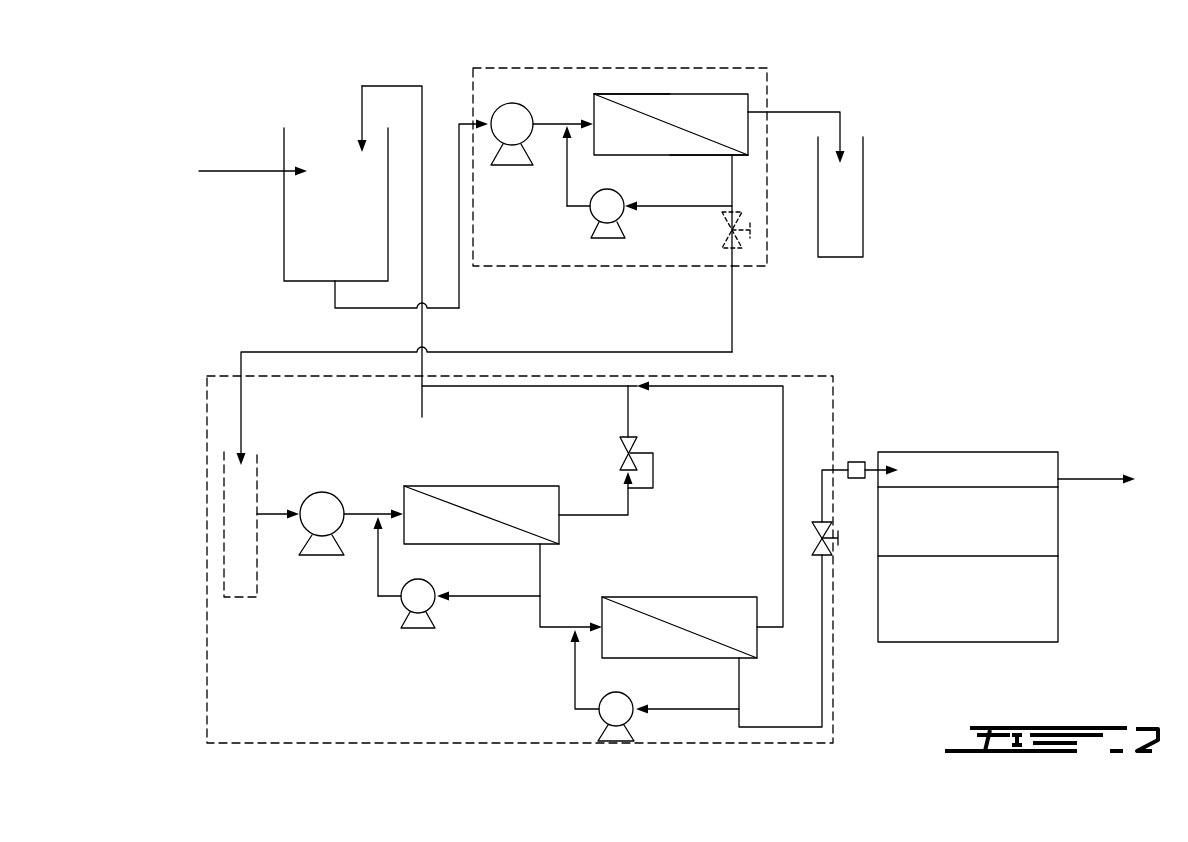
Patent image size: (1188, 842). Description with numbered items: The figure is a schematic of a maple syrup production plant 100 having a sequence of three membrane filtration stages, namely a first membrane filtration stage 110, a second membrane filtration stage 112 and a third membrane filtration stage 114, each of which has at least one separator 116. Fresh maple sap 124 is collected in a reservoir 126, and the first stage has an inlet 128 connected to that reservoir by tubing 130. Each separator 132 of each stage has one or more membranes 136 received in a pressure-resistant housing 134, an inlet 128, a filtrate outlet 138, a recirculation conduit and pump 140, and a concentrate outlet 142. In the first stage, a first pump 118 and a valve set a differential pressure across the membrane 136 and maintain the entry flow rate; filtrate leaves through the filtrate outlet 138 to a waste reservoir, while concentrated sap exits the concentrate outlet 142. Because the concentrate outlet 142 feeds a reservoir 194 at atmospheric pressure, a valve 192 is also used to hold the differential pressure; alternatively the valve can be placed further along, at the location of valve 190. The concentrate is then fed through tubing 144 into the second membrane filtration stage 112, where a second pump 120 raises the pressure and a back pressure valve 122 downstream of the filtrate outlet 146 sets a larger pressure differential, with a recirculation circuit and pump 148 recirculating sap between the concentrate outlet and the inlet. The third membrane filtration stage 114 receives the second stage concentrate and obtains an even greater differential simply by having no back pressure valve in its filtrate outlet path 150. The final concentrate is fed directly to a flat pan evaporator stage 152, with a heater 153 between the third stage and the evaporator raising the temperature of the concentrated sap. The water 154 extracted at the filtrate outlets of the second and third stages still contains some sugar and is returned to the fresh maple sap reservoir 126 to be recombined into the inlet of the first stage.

The maple syrup production plant 100 is at (1010, 394).
The first membrane filtration stage 110 is at (778, 67).
The second membrane filtration stage 112 is at (511, 456).
The third membrane filtration stage 114 is at (694, 561).
The separator 116 is at (665, 80).
The first pump 118 is at (508, 116).
The second pump 120 is at (322, 492).
The back pressure valve 122 is at (642, 442).
The fresh maple sap 124 is at (236, 171).
The reservoir 126 is at (284, 236).
The inlet 128 is at (461, 185).
The tubing 130 is at (335, 300).
The separator 132 is at (602, 82).
The pressure-resistant housing 134 is at (670, 155).
The membrane 136 is at (690, 130).
The filtrate outlet 138 is at (823, 112).
The recirculation conduit and pump 140 is at (617, 212).
The concentrate outlet 142 is at (732, 310).
The tubing 144 is at (535, 352).
The filtrate outlet 146 is at (595, 515).
The recirculation circuit and pump 148 is at (432, 607).
The filtrate outlet path 150 is at (783, 480).
The flat pan evaporator stage 152 is at (965, 453).
The heater 153 is at (855, 462).
The water 154 is at (474, 388).
The valve 190 is at (822, 522).
The valve 192 is at (740, 212).
The reservoir 194 is at (257, 578).